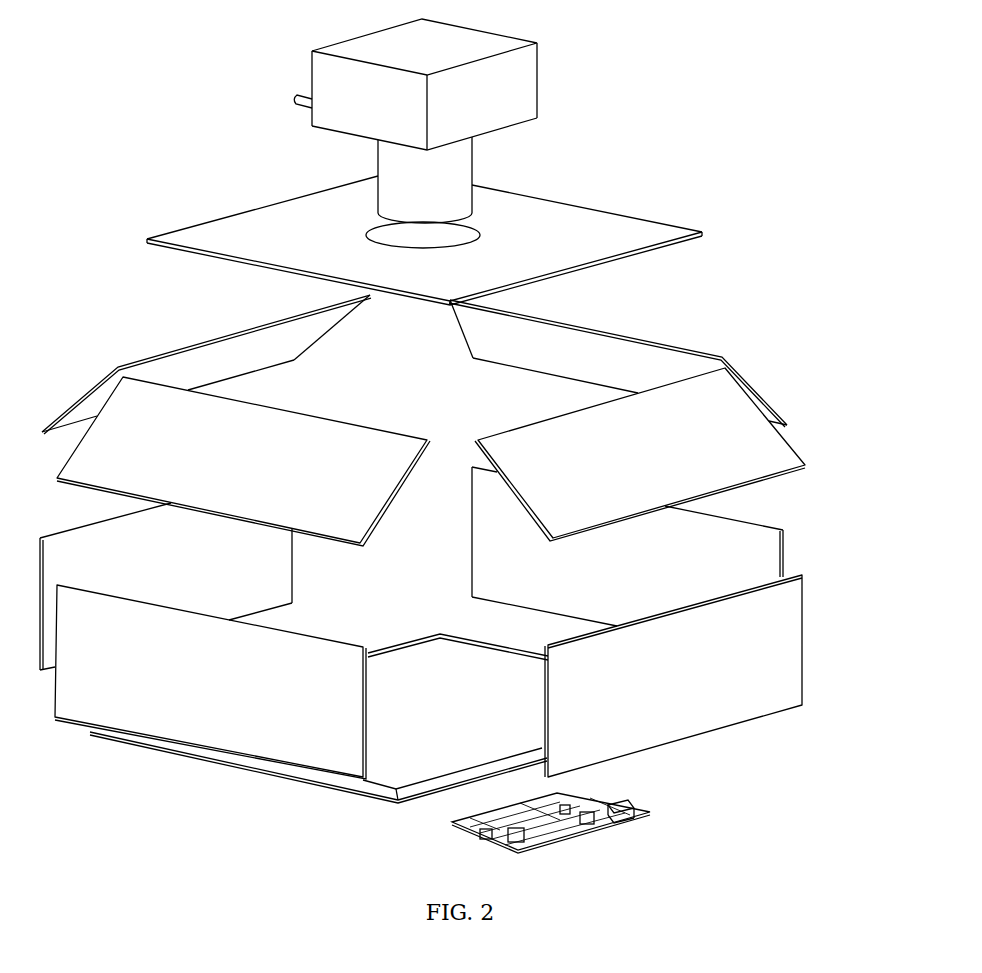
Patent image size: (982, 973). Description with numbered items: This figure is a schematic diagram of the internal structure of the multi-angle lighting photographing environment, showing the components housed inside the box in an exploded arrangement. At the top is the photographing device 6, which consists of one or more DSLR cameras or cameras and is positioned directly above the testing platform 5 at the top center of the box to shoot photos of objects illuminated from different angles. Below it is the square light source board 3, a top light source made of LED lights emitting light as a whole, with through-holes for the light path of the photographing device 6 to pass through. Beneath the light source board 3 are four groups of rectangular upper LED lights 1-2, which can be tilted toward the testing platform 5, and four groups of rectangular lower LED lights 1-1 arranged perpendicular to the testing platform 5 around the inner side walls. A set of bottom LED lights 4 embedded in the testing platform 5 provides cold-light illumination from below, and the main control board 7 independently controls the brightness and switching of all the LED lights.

The lower LED light 1-1 is at (707, 637).
The upper LED light 1-2 is at (707, 435).
The light source board 3 is at (705, 233).
The bottom LED light 4 is at (450, 766).
The testing platform 5 is at (450, 706).
The photographing device 6 is at (557, 81).
The main control board 7 is at (655, 822).